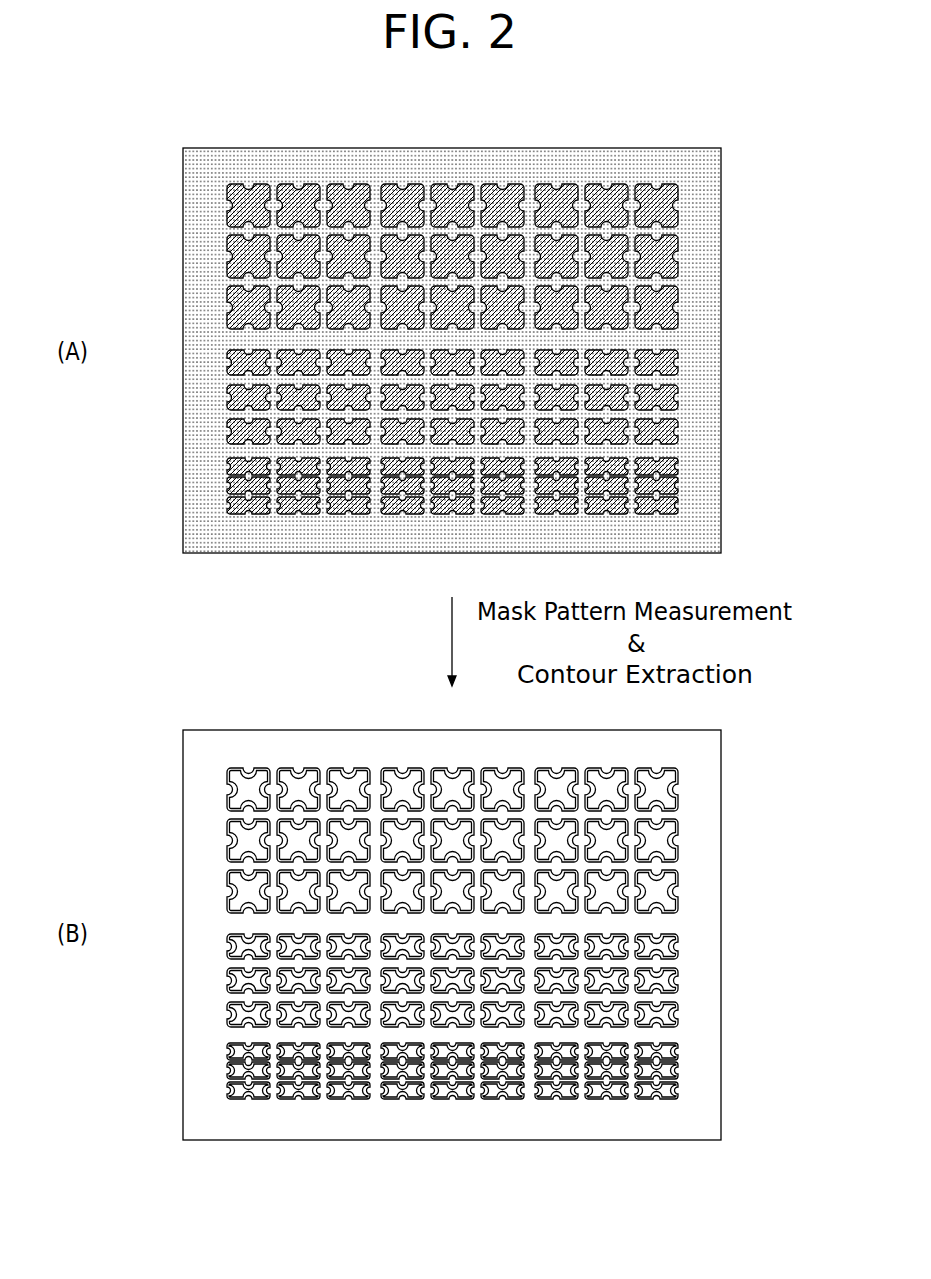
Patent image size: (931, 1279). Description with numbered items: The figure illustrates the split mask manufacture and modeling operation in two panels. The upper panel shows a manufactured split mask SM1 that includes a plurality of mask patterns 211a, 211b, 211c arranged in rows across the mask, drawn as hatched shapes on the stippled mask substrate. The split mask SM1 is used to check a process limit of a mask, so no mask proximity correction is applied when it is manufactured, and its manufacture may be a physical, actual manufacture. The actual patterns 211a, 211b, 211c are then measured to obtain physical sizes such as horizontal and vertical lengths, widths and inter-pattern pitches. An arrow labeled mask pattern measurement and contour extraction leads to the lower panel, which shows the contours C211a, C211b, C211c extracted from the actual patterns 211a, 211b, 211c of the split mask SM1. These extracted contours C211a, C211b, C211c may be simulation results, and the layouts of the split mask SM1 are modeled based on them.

The split mask SM1 is at (721, 240).
The mask pattern 211a is at (243, 254).
The mask pattern 211b is at (243, 394).
The mask pattern 211c is at (243, 488).
The contour C211a is at (243, 842).
The contour C211b is at (243, 984).
The contour C211c is at (243, 1078).